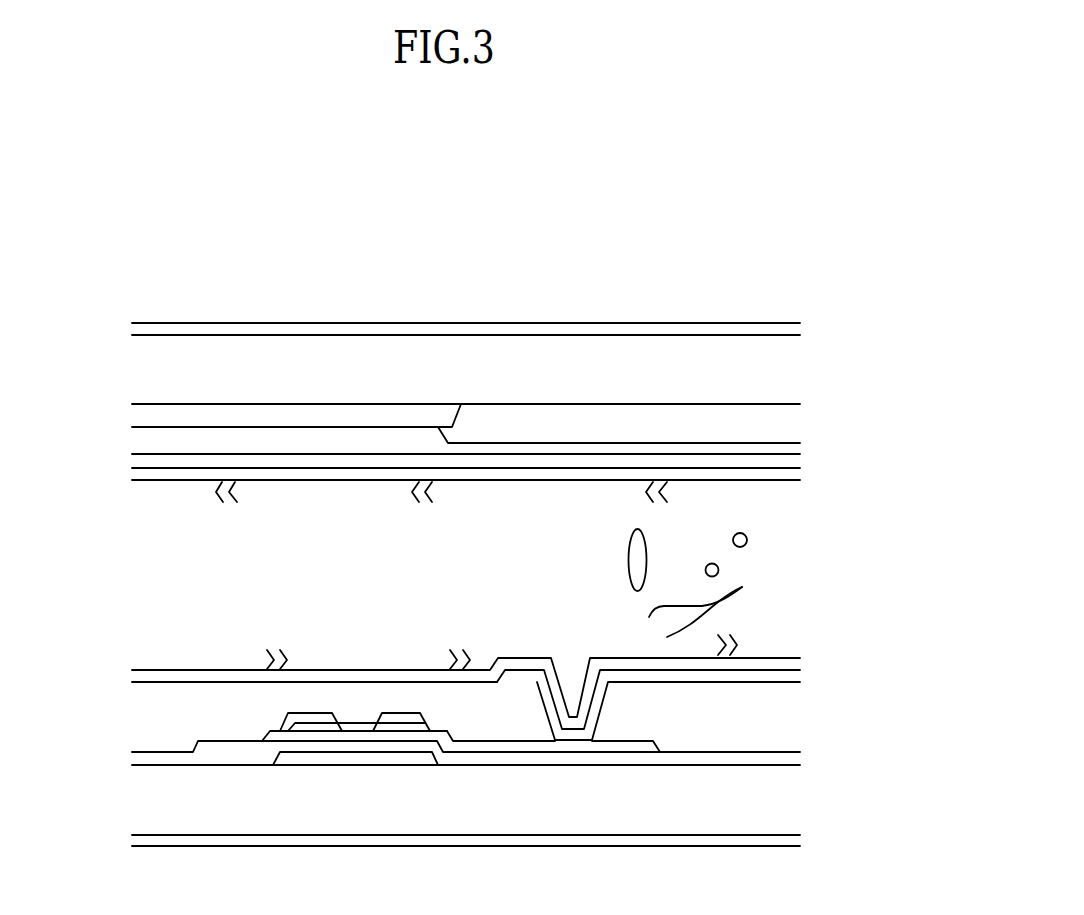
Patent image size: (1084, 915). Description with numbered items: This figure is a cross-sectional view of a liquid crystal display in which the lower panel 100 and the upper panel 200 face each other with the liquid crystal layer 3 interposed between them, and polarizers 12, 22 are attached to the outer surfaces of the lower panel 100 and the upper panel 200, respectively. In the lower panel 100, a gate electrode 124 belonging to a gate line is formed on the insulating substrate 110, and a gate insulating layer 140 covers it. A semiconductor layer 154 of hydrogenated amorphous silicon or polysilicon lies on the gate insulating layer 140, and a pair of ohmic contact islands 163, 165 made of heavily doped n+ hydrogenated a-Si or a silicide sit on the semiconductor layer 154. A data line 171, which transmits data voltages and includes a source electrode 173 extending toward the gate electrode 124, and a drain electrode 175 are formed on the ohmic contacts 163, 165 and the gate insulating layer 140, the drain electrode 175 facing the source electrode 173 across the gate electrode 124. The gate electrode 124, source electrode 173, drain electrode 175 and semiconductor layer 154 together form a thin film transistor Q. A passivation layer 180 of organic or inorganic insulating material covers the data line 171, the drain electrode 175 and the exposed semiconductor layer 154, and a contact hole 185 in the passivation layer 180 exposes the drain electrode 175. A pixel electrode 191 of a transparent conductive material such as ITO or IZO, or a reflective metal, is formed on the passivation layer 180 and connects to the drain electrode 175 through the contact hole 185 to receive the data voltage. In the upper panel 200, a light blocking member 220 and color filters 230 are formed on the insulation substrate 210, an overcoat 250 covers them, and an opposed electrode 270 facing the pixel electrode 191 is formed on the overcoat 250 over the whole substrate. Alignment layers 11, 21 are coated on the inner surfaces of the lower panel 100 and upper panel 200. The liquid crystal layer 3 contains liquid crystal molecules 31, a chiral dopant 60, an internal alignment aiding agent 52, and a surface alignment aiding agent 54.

The upper panel 200 is at (128, 335).
The polarizer 22 is at (184, 328).
The insulation substrate 210 is at (285, 353).
The light blocking member 220 is at (372, 415).
The color filters 230 is at (535, 423).
The overcoat 250 is at (642, 450).
The opposed electrode 270 is at (285, 462).
The alignment layer 21 is at (345, 473).
The liquid crystal layer 3 is at (128, 484).
The surface alignment aiding agent 54 is at (667, 492).
The liquid crystal molecules 31 is at (647, 545).
The chiral dopant 60 is at (748, 540).
The internal alignment aiding agent 52 is at (733, 593).
The lower panel 100 is at (128, 672).
The alignment layer 11 is at (220, 677).
The pixel electrode 191 is at (525, 678).
The contact hole 185 is at (597, 708).
The passivation layer 180 is at (493, 718).
The drain electrode 175 is at (404, 718).
The source electrode 173 is at (317, 718).
The thin film transistor Q is at (357, 714).
The ohmic contact island 163 is at (323, 726).
The ohmic contact island 165 is at (398, 728).
The semiconductor layer 154 is at (368, 736).
The data line 171 is at (222, 747).
The gate electrode 124 is at (343, 760).
The gate insulating layer 140 is at (553, 758).
The insulating substrate 110 is at (199, 822).
The polarizer 12 is at (153, 842).